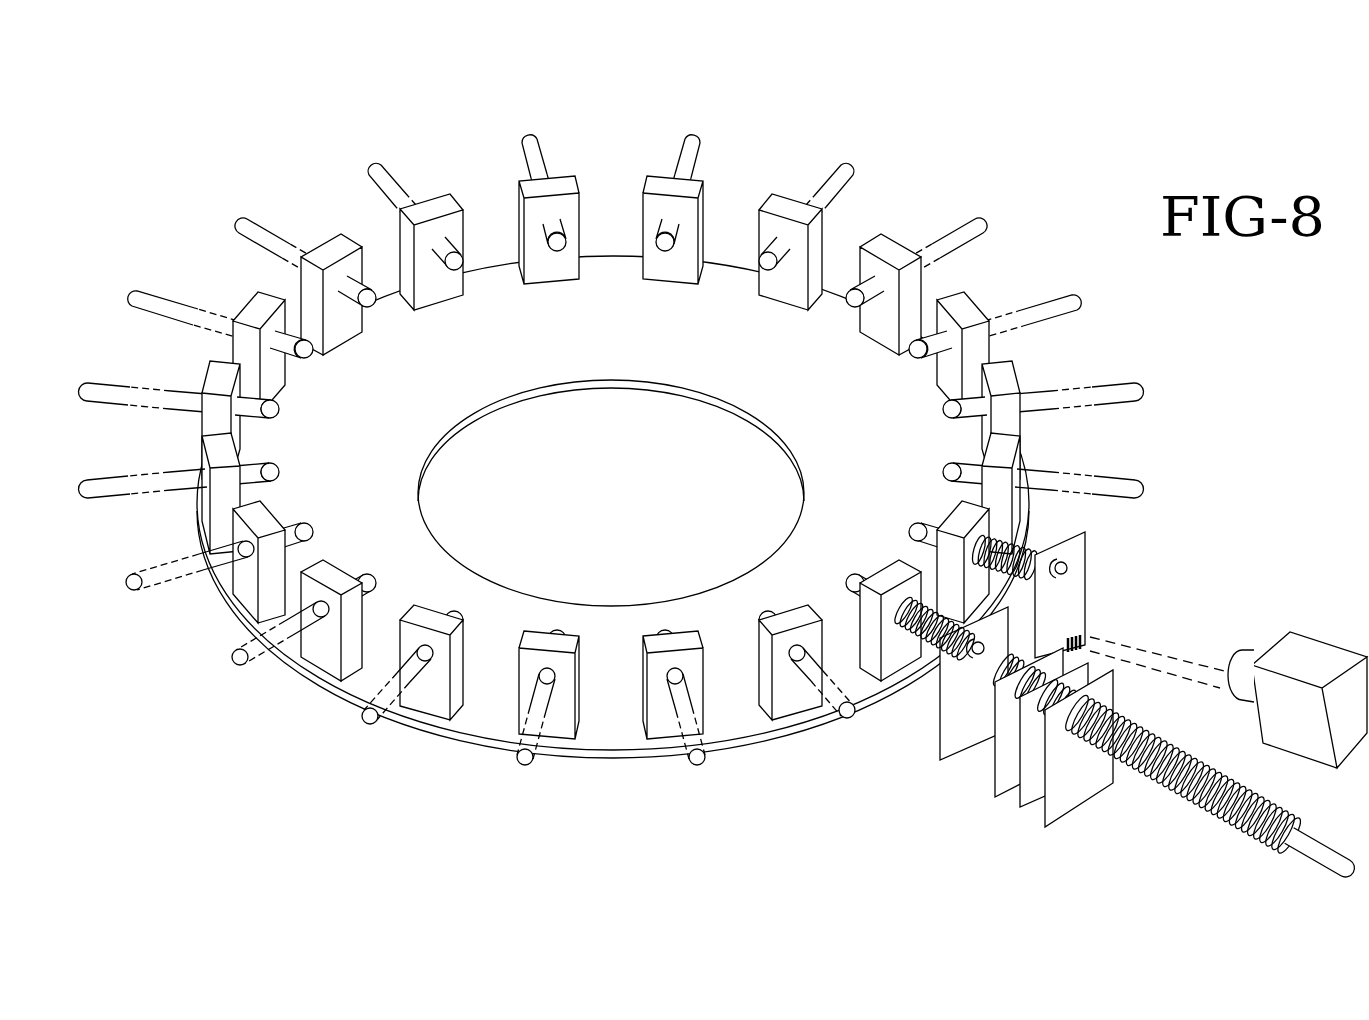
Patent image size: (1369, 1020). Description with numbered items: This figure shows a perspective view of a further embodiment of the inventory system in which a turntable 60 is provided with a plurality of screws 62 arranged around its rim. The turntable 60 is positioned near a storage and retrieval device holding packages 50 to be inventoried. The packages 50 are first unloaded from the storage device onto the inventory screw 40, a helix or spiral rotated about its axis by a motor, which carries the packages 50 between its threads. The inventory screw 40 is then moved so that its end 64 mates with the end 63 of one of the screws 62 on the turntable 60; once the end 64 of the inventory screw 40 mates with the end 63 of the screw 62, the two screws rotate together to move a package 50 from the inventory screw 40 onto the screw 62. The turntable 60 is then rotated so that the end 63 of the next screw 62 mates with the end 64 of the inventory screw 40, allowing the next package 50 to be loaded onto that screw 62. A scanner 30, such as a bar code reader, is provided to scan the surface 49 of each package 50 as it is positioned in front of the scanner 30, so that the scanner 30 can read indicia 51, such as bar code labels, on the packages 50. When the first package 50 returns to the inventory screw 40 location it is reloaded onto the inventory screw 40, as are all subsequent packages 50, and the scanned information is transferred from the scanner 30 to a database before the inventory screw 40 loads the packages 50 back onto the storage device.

The turntable 60 is at (513, 317).
The screw 62 is at (944, 193).
The end 63 is at (1068, 565).
The surface 49 is at (1072, 605).
The indicia 51 is at (1098, 637).
The end 64 is at (979, 656).
The package 50 is at (1020, 822).
The inventory screw 40 is at (1222, 812).
The scanner 30 is at (1325, 660).